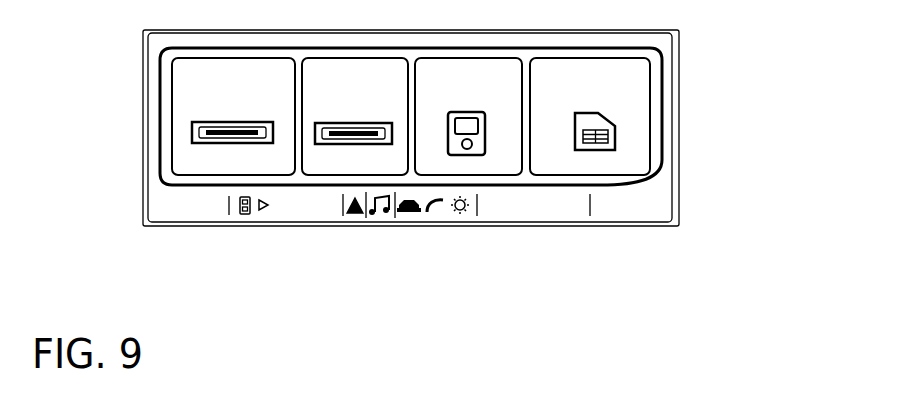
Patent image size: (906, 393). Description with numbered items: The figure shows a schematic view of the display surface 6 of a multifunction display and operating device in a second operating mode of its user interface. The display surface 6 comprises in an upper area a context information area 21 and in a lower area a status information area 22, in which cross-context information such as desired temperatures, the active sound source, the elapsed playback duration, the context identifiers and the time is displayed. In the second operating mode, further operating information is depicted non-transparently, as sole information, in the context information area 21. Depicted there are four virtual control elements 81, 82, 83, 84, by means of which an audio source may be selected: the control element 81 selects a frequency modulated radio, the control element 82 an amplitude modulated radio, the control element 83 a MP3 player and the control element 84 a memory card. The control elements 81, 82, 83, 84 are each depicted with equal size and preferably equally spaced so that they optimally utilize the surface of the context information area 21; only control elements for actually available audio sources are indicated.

The display surface 6 is at (666, 179).
The context information area 21 is at (139, 30).
The status information area 22 is at (139, 183).
The control element 81 is at (260, 165).
The control element 82 is at (348, 163).
The control element 83 is at (488, 163).
The control element 84 is at (584, 163).